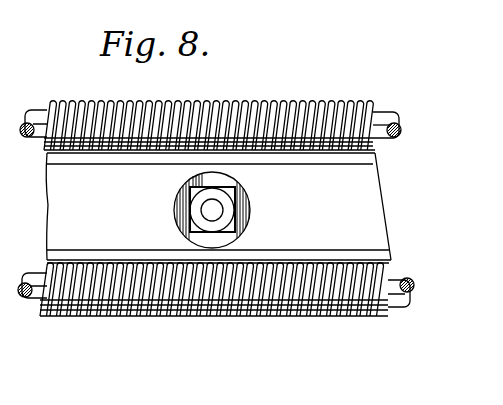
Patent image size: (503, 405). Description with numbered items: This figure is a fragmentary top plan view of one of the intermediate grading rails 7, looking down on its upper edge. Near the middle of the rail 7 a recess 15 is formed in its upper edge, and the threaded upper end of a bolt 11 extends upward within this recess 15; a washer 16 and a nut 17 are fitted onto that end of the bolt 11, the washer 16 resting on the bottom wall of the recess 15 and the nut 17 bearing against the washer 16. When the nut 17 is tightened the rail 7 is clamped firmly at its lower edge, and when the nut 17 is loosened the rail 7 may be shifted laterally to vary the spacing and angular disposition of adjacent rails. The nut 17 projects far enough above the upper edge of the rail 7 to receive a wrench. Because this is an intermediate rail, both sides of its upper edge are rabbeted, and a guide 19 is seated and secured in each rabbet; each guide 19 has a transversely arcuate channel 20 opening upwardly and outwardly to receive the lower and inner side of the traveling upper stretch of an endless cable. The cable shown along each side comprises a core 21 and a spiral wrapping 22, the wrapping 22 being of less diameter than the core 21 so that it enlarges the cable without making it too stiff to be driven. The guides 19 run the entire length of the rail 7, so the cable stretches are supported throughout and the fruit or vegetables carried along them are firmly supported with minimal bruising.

The grading rail 7 is at (360, 219).
The bolt 11 is at (220, 211).
The recess 15 is at (238, 201).
The washer 16 is at (233, 236).
The nut 17 is at (240, 220).
The guide 19 is at (368, 258).
The transversely arcuate channel 20 is at (386, 289).
The core 21 is at (394, 118).
The spiral wrapping 22 is at (330, 103).